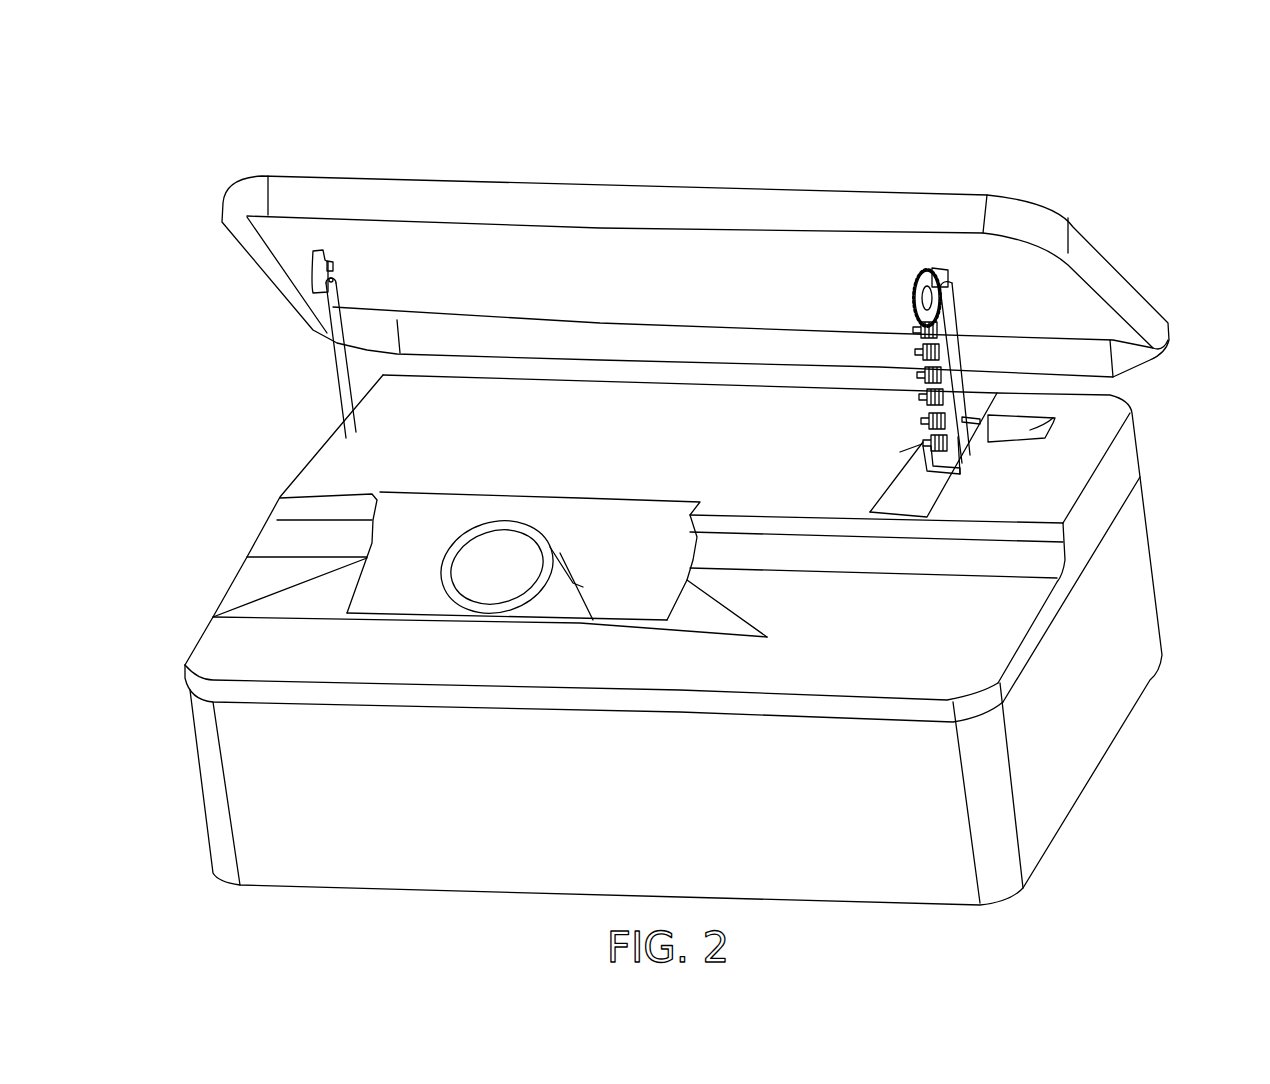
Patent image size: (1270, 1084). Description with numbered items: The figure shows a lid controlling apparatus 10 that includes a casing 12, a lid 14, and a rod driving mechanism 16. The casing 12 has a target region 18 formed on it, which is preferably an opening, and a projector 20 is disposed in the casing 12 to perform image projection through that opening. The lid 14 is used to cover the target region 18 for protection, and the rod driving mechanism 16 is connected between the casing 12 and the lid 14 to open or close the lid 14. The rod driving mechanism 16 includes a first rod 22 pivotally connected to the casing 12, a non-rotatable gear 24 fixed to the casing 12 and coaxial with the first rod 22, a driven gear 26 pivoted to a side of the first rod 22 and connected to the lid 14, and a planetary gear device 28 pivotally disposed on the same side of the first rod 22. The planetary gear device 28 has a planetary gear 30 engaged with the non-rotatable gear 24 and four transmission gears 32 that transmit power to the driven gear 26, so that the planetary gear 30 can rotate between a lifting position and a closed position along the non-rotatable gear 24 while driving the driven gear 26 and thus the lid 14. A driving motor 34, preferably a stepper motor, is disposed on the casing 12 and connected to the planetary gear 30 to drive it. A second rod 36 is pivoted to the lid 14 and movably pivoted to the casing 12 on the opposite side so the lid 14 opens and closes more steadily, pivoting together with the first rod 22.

The lid controlling apparatus 10 is at (326, 103).
The casing 12 is at (1147, 520).
The lid 14 is at (247, 242).
The rod driving mechanism 16 is at (998, 95).
The target region 18 is at (372, 543).
The projector 20 is at (453, 580).
The first rod 22 is at (942, 292).
The non-rotatable gear 24 is at (931, 443).
The driven gear 26 is at (927, 270).
The planetary gear device 28 is at (907, 147).
The planetary gear 30 is at (929, 421).
The transmission gear 32 is at (927, 397).
The driving motor 34 is at (1033, 428).
The second rod 36 is at (337, 302).